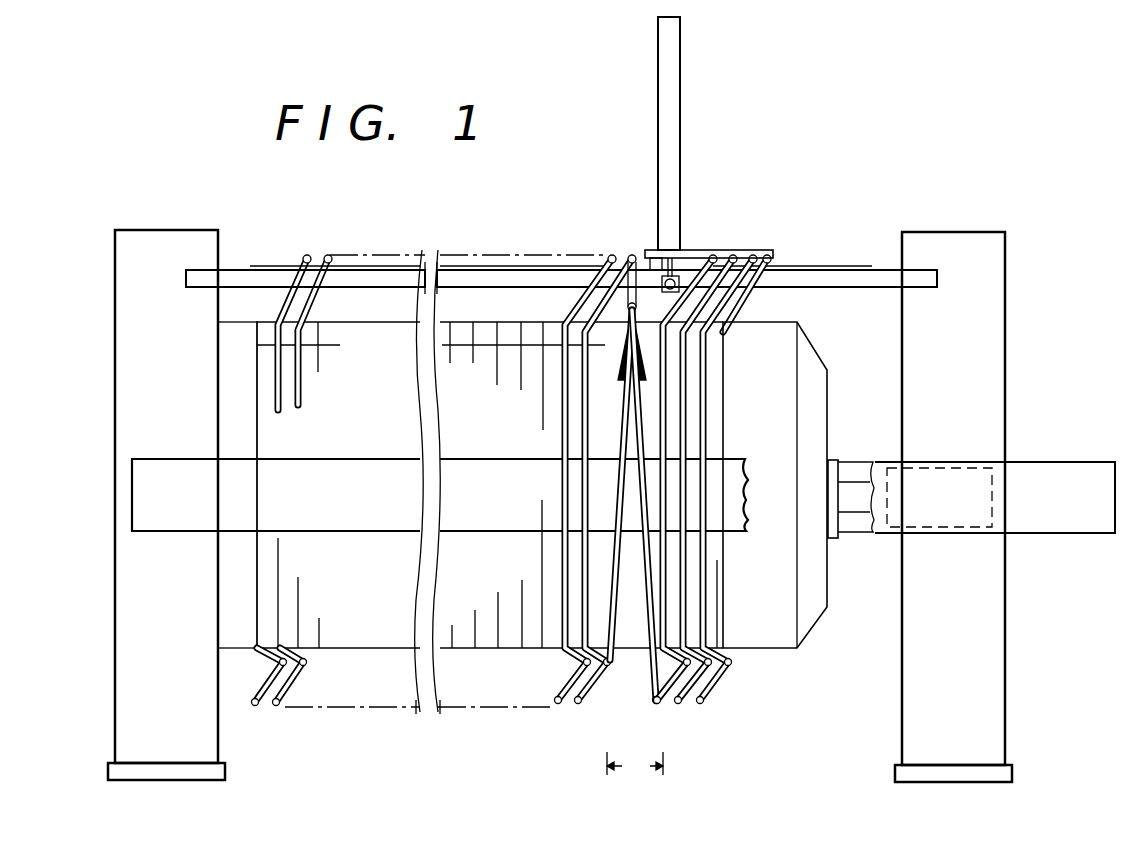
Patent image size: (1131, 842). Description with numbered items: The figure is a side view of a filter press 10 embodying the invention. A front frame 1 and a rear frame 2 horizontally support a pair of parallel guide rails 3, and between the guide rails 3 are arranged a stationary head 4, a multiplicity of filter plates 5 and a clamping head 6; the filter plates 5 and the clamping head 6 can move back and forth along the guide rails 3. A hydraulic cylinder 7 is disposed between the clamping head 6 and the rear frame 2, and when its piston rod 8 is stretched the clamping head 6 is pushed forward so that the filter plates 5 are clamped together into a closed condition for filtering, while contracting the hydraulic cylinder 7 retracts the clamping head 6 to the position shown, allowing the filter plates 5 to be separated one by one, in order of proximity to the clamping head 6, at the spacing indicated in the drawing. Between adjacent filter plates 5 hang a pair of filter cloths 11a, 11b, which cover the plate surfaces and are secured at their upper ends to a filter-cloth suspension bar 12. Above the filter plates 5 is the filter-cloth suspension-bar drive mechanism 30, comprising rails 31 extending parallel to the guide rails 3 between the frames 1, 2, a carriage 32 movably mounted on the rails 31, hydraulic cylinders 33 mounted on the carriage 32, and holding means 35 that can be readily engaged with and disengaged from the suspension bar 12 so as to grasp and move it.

The front frame 1 is at (130, 680).
The rear frame 2 is at (985, 696).
The guide rail 3 is at (350, 477).
The stationary head 4 is at (238, 627).
The filter plate 5 is at (488, 635).
The clamping head 6 is at (780, 628).
The hydraulic cylinder 7 is at (1067, 515).
The piston rod 8 is at (858, 505).
The filter press 10 is at (493, 429).
The filter cloth 11a is at (612, 662).
The filter cloth 11b is at (644, 658).
The filter-cloth suspension bar 12 is at (597, 258).
The filter-cloth suspension-bar drive mechanism 30 is at (745, 178).
The rail 31 is at (848, 278).
The carriage 32 is at (735, 256).
The hydraulic cylinder 33 is at (665, 135).
The filter-cloth suspension-bar holding means 35 is at (693, 256).